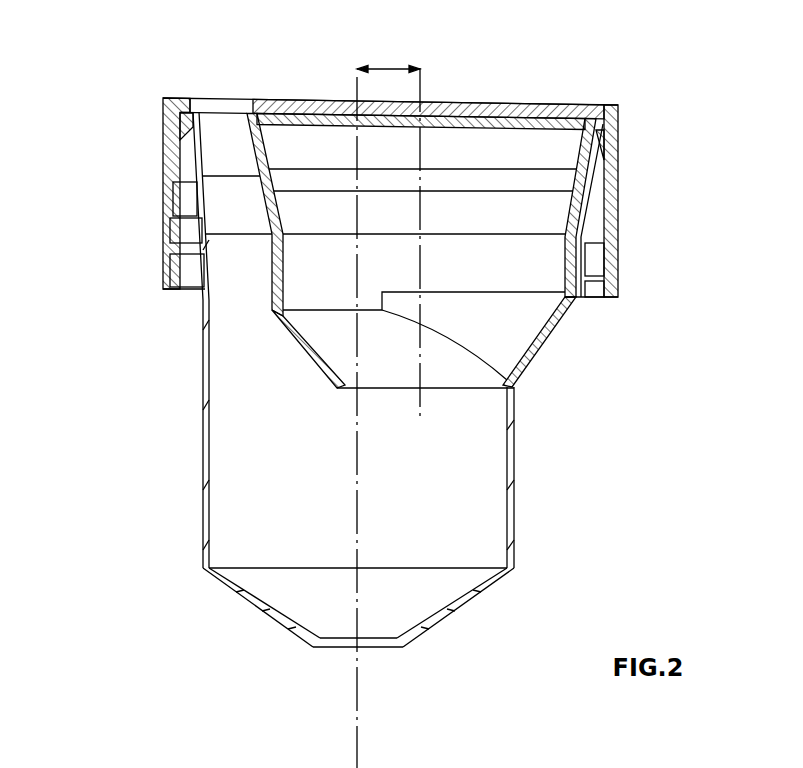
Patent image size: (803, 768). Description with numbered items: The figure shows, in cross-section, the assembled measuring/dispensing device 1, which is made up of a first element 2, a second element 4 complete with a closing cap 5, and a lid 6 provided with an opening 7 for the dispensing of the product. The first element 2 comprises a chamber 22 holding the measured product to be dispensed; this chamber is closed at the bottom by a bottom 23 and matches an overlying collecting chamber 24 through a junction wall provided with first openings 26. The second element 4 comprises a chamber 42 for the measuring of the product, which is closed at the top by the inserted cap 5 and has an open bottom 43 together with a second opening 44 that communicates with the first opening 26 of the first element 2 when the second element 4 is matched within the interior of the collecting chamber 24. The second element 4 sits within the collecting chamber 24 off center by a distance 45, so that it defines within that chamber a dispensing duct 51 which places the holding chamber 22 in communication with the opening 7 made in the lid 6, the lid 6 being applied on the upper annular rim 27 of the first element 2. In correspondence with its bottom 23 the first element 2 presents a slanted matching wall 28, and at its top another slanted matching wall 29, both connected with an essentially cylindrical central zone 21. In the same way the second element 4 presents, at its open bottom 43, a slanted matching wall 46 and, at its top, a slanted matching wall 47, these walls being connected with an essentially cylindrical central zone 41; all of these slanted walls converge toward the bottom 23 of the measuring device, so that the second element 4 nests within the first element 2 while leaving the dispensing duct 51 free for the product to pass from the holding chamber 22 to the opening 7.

The measuring/dispensing device 1 is at (405, 155).
The first element 2 is at (353, 416).
The second element 4 is at (242, 278).
The closing cap 5 is at (292, 113).
The lid 6 is at (527, 110).
The opening 7 is at (220, 108).
The cylindrical central zone 21 is at (514, 452).
The chamber 22 is at (245, 516).
The bottom 23 is at (340, 640).
The collecting chamber 24 is at (250, 370).
The first openings 26 is at (498, 340).
The upper annular rim 27 is at (180, 148).
The slanted matching wall 28 is at (243, 593).
The slanted matching wall 29 is at (273, 223).
The cylindrical central zone 41 is at (275, 265).
The chamber 42 is at (520, 215).
The open bottom 43 is at (397, 367).
The second opening 44 is at (595, 260).
The distance 45 is at (390, 68).
The slanted matching wall 46 is at (322, 368).
The slanted matching wall 47 is at (196, 202).
The dispensing duct 51 is at (218, 192).